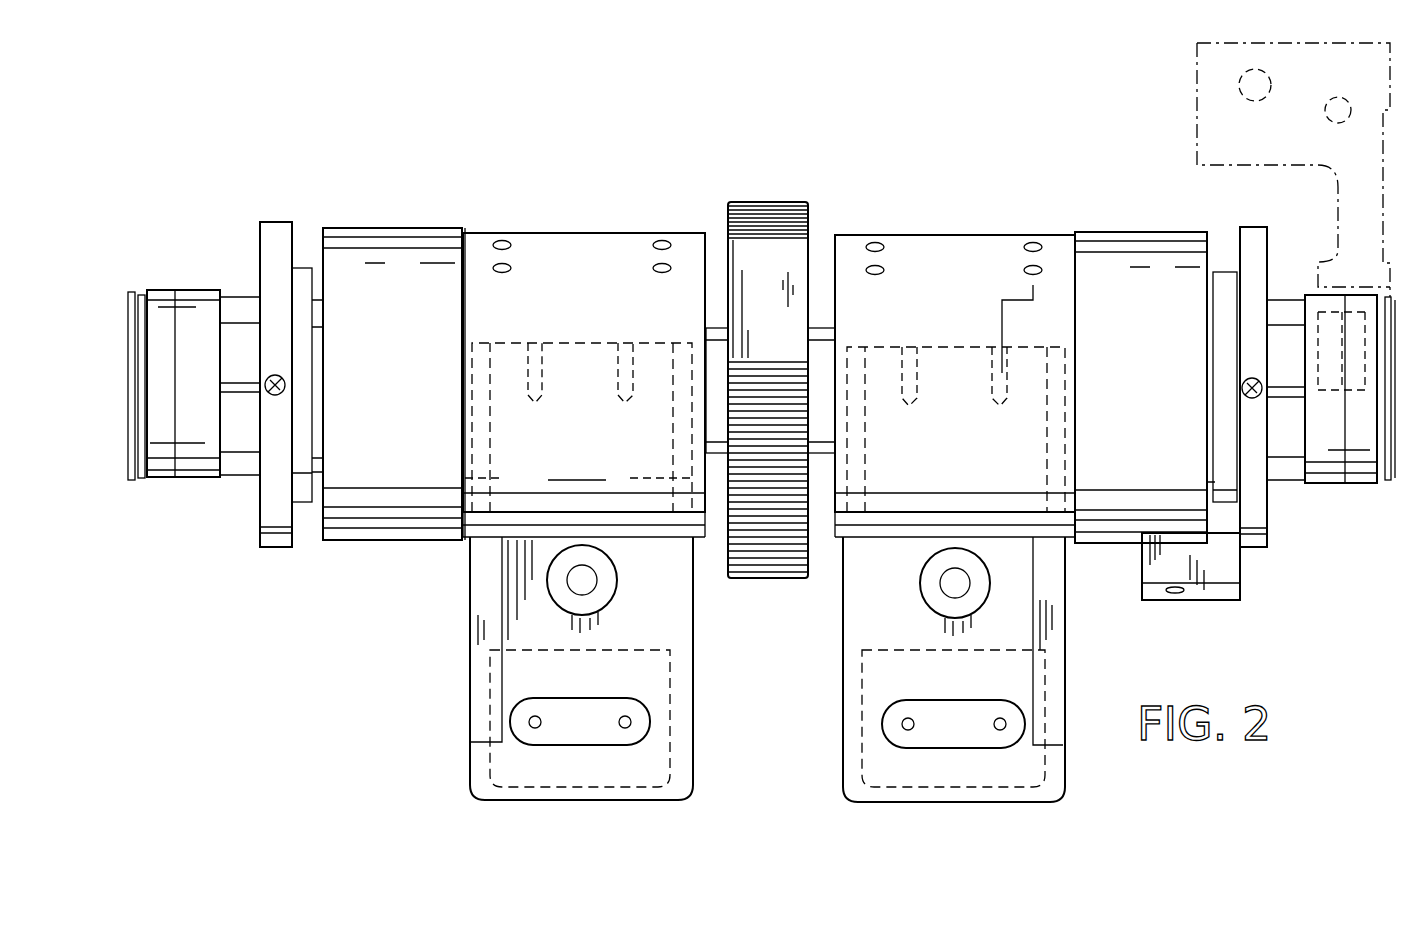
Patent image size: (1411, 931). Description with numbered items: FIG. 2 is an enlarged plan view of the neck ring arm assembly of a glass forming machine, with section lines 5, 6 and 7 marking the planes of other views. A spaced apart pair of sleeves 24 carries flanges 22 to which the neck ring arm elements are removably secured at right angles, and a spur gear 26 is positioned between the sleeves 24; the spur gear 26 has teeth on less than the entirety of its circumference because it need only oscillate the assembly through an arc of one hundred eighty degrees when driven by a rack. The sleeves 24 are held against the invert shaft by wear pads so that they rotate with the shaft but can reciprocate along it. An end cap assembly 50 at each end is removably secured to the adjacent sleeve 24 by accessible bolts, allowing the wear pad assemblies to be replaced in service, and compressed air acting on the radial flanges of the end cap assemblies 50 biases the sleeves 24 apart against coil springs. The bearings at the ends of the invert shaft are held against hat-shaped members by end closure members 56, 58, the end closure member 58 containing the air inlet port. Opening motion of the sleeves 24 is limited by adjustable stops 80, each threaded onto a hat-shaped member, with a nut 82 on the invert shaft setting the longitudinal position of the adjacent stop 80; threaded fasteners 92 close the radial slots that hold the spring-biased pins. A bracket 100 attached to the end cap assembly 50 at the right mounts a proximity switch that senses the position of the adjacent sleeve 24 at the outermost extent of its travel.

The section line 5- 5 is at (1033, 235).
The section line 6- 6 is at (273, 253).
The section line 7- 7 is at (299, 800).
The flange 22 is at (705, 732).
The sleeve 24 is at (574, 233).
The spur gear 26 is at (766, 202).
The end cap assembly 50 is at (384, 230).
The end closure member 56 is at (162, 290).
The end closure member 58 is at (1338, 483).
The adjustable stop 80 is at (262, 535).
The nut 82 is at (308, 505).
The threaded fastener 92 is at (262, 392).
The bracket 100 is at (1207, 602).